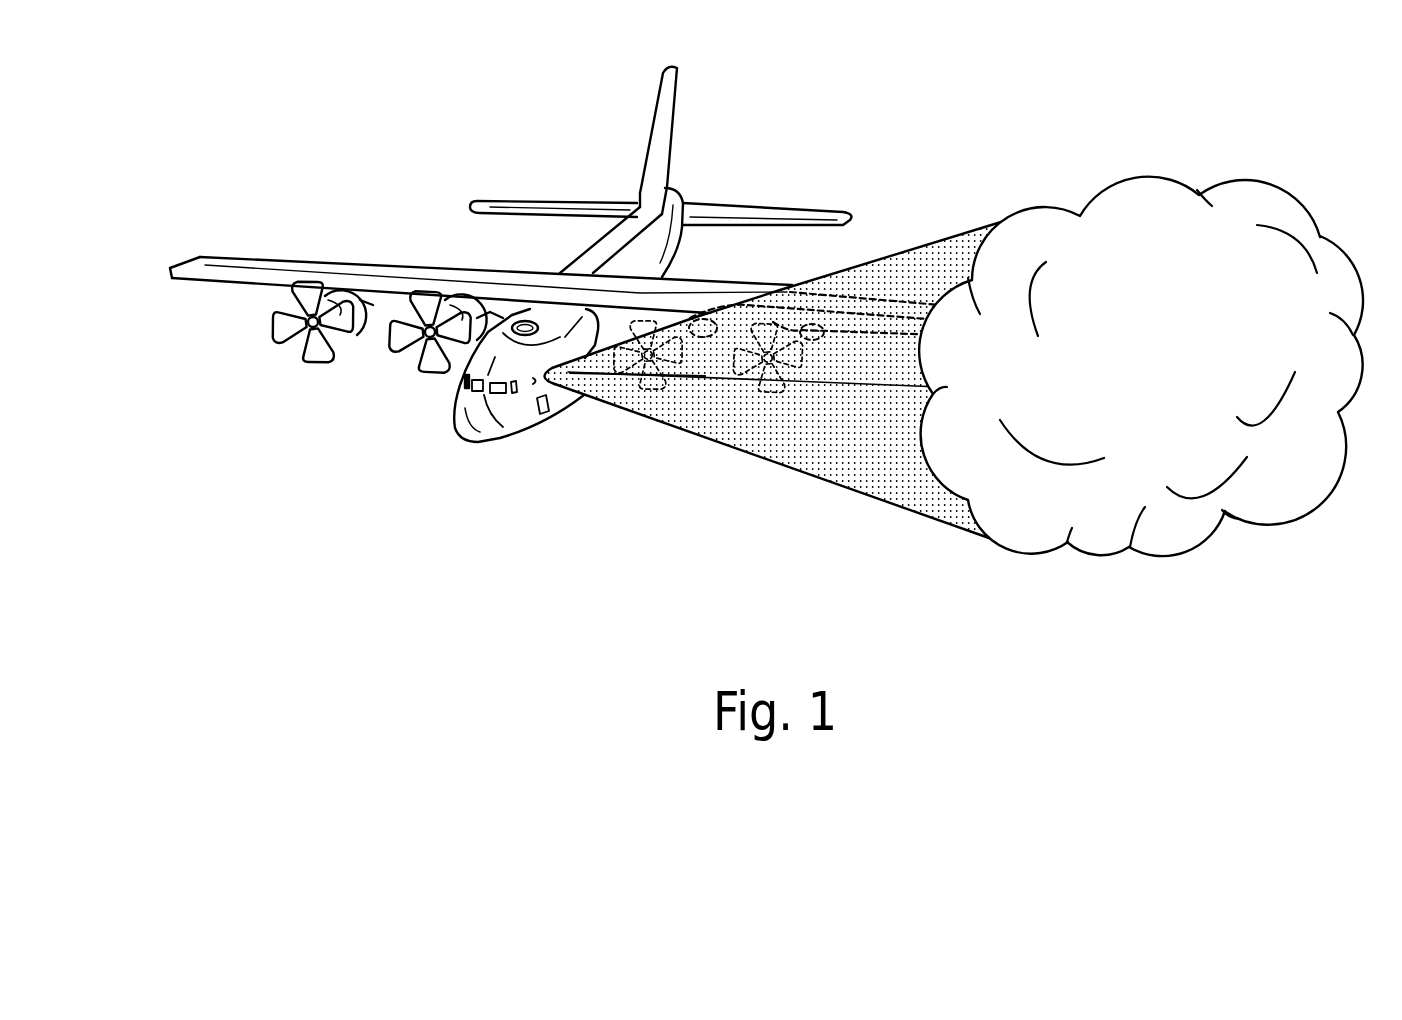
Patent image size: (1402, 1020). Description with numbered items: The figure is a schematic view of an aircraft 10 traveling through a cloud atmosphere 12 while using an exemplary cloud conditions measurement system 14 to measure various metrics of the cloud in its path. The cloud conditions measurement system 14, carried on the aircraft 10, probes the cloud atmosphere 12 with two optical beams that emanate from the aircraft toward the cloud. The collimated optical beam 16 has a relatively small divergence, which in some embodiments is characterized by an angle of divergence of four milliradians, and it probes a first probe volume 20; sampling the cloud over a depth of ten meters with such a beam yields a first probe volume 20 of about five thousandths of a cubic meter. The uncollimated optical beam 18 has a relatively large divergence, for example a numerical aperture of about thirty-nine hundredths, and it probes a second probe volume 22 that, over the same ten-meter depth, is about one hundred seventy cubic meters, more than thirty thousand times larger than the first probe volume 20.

The aircraft 10 is at (381, 140).
The cloud atmosphere 12 is at (1141, 366).
The cloud conditions measurement system 14 is at (533, 379).
The collimated optical beam 16 is at (805, 396).
The uncollimated optical beam 18 is at (926, 242).
The first probe volume 20 is at (840, 382).
The second probe volume 22 is at (774, 372).